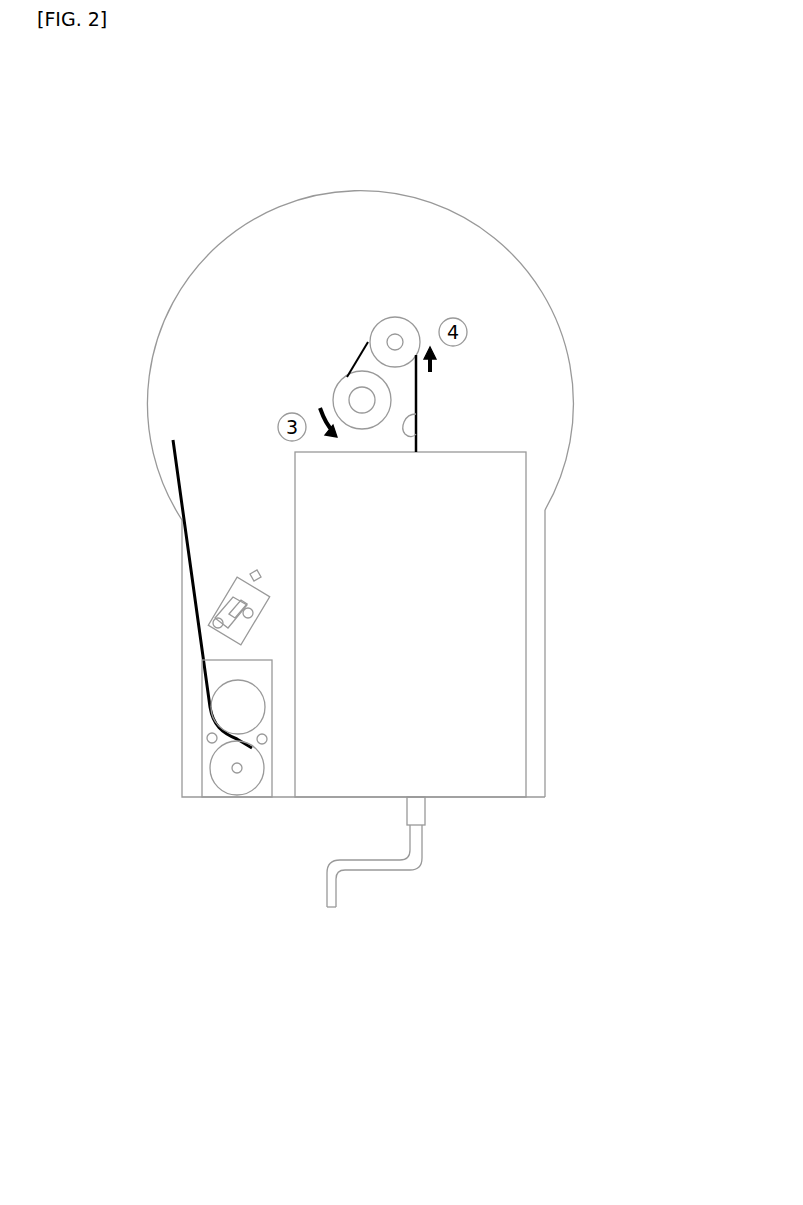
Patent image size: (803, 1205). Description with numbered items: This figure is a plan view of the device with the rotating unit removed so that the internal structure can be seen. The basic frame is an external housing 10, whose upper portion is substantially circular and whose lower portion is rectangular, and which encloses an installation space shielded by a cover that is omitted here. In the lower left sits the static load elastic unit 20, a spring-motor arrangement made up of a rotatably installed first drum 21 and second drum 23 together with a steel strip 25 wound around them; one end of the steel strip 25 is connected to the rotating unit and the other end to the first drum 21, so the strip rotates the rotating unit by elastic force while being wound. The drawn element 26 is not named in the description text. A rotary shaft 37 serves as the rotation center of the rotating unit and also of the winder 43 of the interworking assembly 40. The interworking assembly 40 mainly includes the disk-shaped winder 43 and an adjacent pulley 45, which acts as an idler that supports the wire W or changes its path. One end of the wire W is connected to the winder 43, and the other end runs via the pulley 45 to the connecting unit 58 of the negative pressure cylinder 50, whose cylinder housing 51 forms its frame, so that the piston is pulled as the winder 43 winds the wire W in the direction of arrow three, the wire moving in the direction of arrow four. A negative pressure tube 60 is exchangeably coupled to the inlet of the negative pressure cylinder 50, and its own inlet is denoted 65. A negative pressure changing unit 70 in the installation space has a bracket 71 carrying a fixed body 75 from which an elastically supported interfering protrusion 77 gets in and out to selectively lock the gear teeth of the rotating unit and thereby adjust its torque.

The external housing 10 is at (520, 256).
The static load elastic unit 20 is at (175, 740).
The first drum 21 is at (223, 780).
The second drum 23 is at (245, 715).
The steel strip 25 is at (240, 608).
The welding wire 26 is at (175, 456).
The rotary shaft 37 is at (358, 398).
The interworking assembly 40 is at (309, 270).
The winder 43 is at (343, 407).
The pulley 45 is at (387, 333).
The negative pressure cylinder 50 is at (548, 540).
The cylinder housing 51 is at (515, 652).
The connecting unit 58 is at (416, 420).
The negative pressure tube 60 is at (417, 870).
The inlet of the negative pressure tube 65 is at (332, 908).
The negative pressure changing unit 70 is at (170, 517).
The bracket 71 is at (212, 652).
The fixed body 75 is at (233, 590).
The interfering protrusion 77 is at (253, 570).
The wire W is at (416, 400).